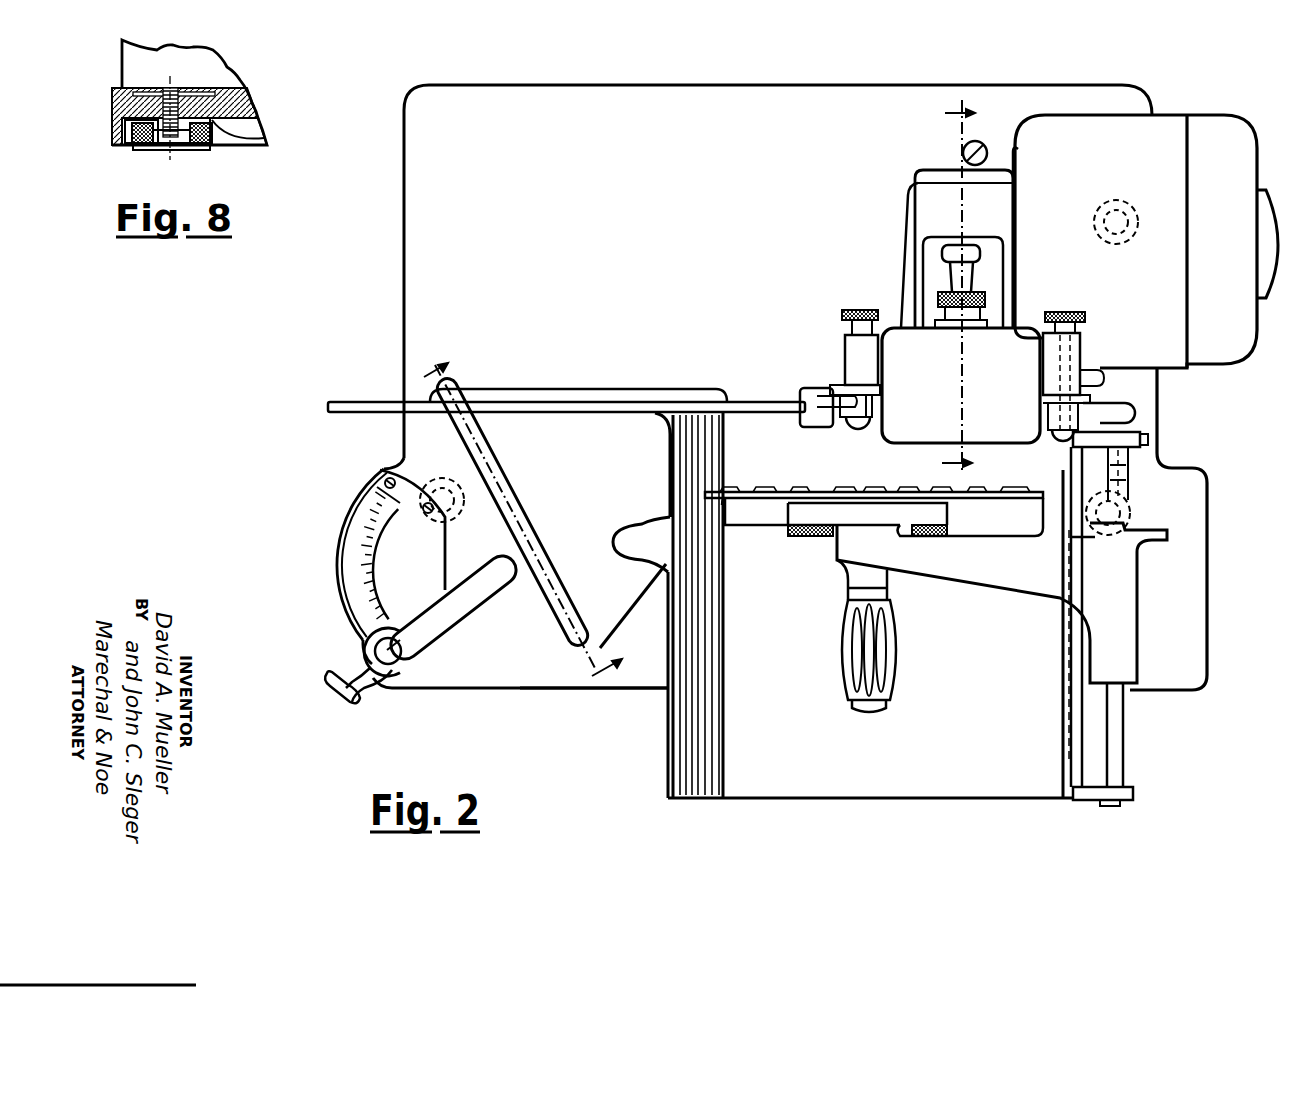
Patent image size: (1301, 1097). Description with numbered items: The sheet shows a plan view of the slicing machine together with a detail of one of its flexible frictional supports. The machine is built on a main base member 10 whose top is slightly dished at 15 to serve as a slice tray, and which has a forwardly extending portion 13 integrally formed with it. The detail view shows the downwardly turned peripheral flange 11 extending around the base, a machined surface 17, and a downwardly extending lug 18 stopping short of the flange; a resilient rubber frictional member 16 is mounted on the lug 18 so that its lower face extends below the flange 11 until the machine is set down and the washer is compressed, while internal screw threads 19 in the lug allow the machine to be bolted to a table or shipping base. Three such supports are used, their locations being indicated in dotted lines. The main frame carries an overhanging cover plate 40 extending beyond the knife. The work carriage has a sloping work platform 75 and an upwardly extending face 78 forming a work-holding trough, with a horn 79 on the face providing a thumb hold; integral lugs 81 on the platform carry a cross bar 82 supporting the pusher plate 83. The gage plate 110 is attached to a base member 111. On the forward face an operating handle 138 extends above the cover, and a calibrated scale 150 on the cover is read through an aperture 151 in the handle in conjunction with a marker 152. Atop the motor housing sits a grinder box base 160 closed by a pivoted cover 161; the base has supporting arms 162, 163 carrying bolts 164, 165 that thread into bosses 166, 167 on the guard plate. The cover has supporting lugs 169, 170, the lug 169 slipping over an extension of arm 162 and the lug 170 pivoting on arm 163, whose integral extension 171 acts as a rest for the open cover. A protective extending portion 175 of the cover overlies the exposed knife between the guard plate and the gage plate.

In FIG. 2, the main base member 10 is at (838, 87).
In FIG. 8, the peripheral flange 11 is at (113, 135).
In FIG. 2, the forwardly extending portion 13 is at (977, 290).
In FIG. 2, the dished top surface 15 is at (441, 188).
In FIG. 8, the frictional member 16 is at (215, 150).
In FIG. 2, the frictional member 16 is at (1127, 200).
In FIG. 8, the machined surface 17 is at (263, 127).
In FIG. 8, the downwardly extending lug 18 is at (150, 149).
In FIG. 8, the internal screw threads 19 is at (169, 150).
In FIG. 2, the cover plate 40 is at (542, 691).
In FIG. 2, the work platform 75 is at (862, 786).
In FIG. 2, the upwardly extending face 78 is at (692, 790).
In FIG. 2, the horn 79 is at (620, 538).
In FIG. 2, the integral lugs 81 is at (1150, 437).
In FIG. 2, the cross bar 82 is at (1120, 755).
In FIG. 2, the pusher plate 83 is at (843, 474).
In FIG. 2, the gage plate 110 is at (358, 401).
In FIG. 2, the base member 111 is at (445, 431).
In FIG. 2, the operating lever or handle 138 is at (372, 692).
In FIG. 2, the calibrated scale 150 is at (366, 581).
In FIG. 2, the aperture 151 is at (375, 652).
In FIG. 2, the marker 152 is at (412, 648).
In FIG. 2, the grinder box base 160 is at (934, 261).
In FIG. 2, the cover 161 is at (925, 432).
In FIG. 2, the supporting arm 162 is at (860, 357).
In FIG. 2, the supporting arm 163 is at (1082, 366).
In FIG. 2, the bolt 164 is at (840, 310).
In FIG. 2, the bolt 165 is at (1086, 314).
In FIG. 2, the boss 166 is at (848, 427).
In FIG. 2, the boss 167 is at (1060, 440).
In FIG. 2, the supporting lug 169 is at (867, 430).
In FIG. 2, the supporting lug 170 is at (1140, 408).
In FIG. 2, the integral extension 171 is at (1106, 382).
In FIG. 2, the protective extending portion 175 is at (806, 418).